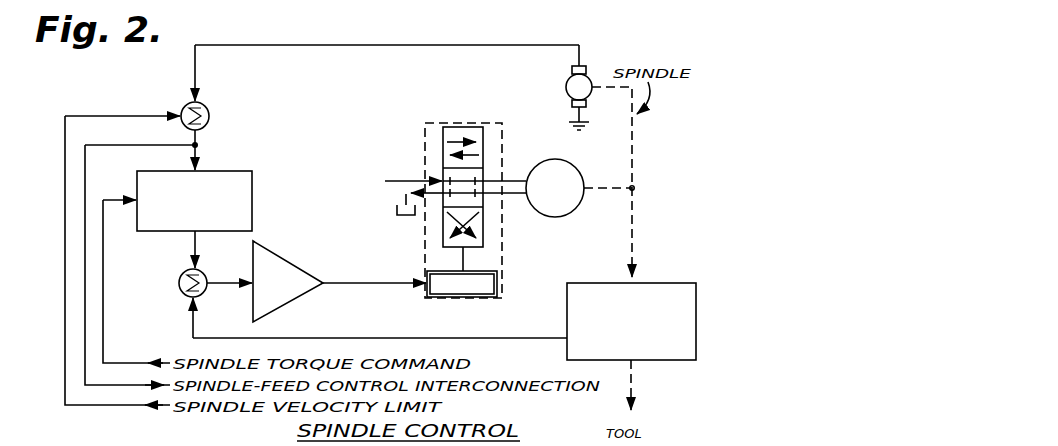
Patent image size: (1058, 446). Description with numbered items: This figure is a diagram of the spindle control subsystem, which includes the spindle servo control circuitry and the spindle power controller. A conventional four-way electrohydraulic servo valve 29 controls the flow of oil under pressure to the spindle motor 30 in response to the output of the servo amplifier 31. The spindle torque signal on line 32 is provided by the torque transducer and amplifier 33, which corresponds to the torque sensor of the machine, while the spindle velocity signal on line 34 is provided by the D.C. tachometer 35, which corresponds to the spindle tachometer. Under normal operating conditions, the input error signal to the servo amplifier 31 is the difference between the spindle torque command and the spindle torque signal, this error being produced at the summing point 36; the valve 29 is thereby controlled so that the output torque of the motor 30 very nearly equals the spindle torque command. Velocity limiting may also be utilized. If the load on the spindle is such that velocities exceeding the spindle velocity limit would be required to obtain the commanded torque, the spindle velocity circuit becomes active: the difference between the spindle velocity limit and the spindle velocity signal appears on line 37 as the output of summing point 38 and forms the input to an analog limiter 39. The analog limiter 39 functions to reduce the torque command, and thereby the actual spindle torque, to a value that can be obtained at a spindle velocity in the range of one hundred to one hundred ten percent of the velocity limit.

The electrohydraulic servo valve 29 is at (428, 149).
The spindle motor 30 is at (573, 166).
The servo amplifier 31 is at (290, 263).
The spindle torque signal line 32 is at (290, 338).
The torque transducer and amplifier 33 is at (680, 300).
The spindle velocity signal line 34 is at (254, 18).
The D.C. tachometer 35 is at (592, 72).
The summing point 36 is at (180, 290).
The velocity difference line 37 is at (202, 154).
The summing point 38 is at (210, 111).
The analog limiter 39 is at (253, 204).